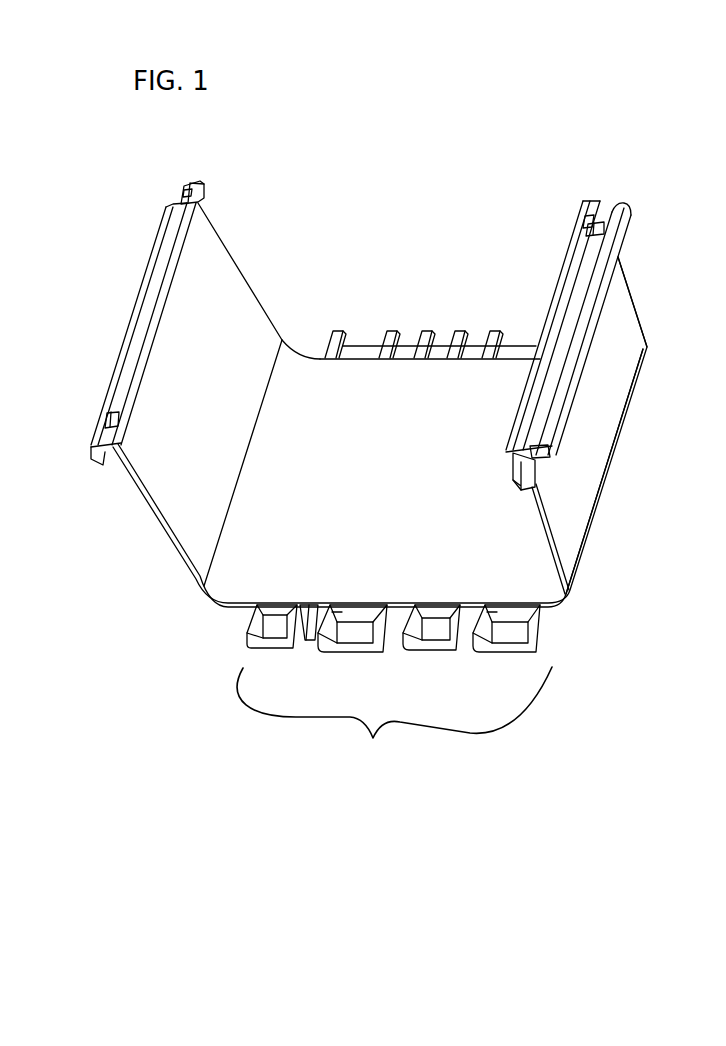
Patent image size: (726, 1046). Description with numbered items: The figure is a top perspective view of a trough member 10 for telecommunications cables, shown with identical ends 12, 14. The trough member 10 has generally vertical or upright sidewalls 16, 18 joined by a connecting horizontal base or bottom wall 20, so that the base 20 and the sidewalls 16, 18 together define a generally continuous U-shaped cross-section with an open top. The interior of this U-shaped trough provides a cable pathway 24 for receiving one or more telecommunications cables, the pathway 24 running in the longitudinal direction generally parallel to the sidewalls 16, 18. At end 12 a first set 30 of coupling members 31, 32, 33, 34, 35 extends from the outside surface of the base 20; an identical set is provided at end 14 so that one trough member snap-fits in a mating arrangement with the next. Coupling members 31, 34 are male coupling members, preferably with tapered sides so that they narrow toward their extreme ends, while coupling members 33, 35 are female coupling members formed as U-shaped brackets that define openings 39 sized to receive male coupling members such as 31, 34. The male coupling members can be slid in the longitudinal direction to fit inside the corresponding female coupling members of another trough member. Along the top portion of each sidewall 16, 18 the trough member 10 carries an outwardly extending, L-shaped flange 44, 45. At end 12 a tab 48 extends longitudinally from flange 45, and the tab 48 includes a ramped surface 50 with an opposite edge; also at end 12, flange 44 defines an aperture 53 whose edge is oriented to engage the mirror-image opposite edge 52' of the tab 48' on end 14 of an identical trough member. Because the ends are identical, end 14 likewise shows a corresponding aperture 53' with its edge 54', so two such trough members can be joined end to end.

The trough member 10 is at (364, 222).
The end 12 is at (214, 600).
The end 14 is at (302, 352).
The sidewall 16 is at (222, 298).
The sidewall 18 is at (607, 418).
The base 20 is at (410, 478).
The cable pathway 24 is at (398, 412).
The first set of coupling members 30 is at (394, 718).
The male coupling member 31 is at (270, 632).
The coupling member 32 is at (298, 634).
The female coupling member 33 is at (352, 638).
The male coupling member 34 is at (428, 638).
The female coupling member 35 is at (500, 640).
The opening 39 is at (340, 612).
The flange 44 is at (140, 323).
The flange 45 is at (605, 258).
The tab 48 is at (589, 486).
The tab 48' is at (218, 174).
The ramped surface 50 is at (516, 476).
The opposite edge 52' is at (160, 171).
The aperture 53 is at (78, 422).
The aperture 53' is at (555, 191).
The edge 54' is at (613, 190).